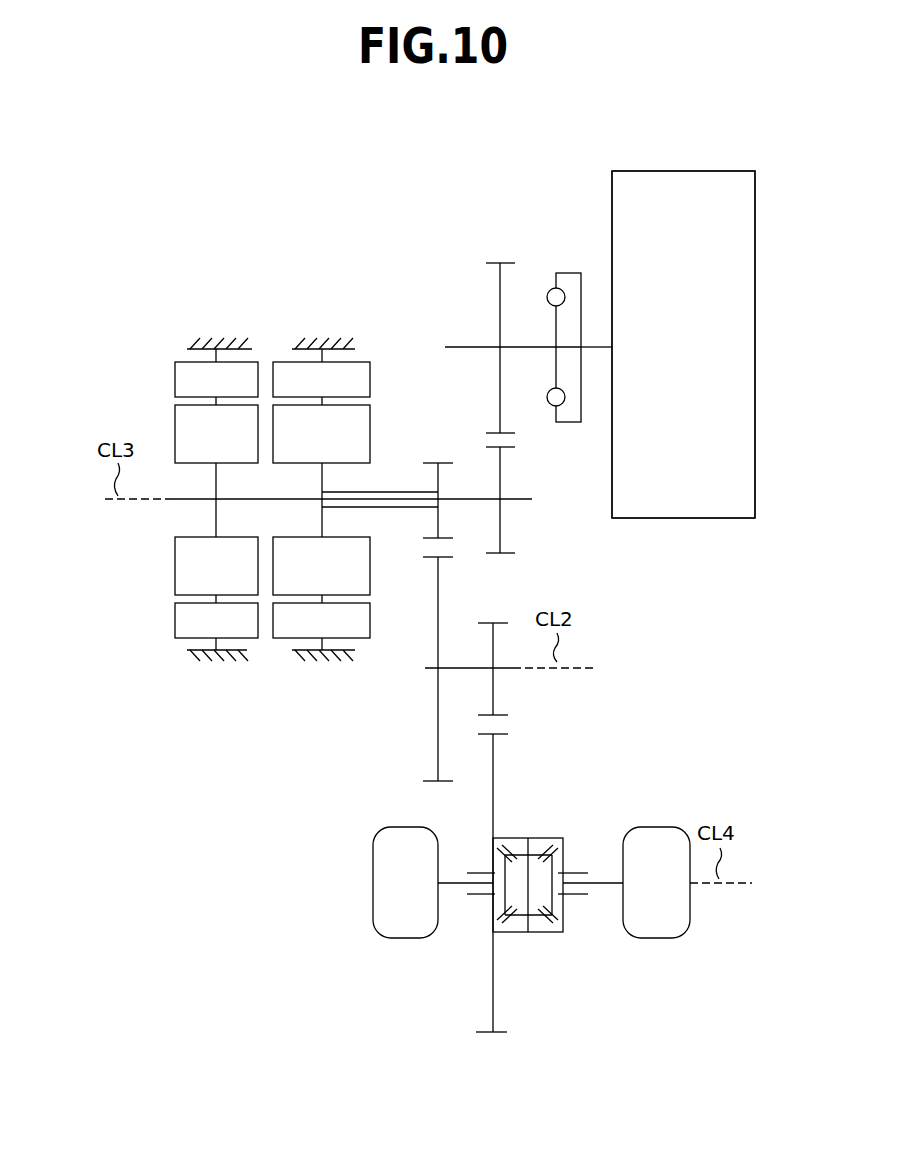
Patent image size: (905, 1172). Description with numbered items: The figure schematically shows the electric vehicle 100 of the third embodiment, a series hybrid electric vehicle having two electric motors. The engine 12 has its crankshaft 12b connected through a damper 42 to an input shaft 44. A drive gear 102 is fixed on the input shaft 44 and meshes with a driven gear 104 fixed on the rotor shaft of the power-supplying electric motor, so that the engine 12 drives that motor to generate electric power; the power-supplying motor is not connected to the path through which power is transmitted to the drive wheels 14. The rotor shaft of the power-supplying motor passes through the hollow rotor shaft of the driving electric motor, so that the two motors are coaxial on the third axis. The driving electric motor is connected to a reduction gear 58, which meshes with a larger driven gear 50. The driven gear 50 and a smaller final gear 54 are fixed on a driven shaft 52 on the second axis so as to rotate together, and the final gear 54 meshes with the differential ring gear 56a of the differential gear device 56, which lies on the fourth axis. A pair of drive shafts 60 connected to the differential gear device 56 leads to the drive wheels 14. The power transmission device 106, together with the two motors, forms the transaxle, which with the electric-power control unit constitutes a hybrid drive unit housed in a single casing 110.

The electric vehicle 100 is at (636, 135).
The engine 12 is at (722, 505).
The crankshaft 12b is at (599, 350).
The damper 42 is at (560, 272).
The input shaft 44 is at (525, 346).
The drive gear 102 is at (498, 431).
The driven gear 104 is at (508, 452).
The reduction gear 58 is at (428, 537).
The driven gear 50 is at (443, 558).
The driven shaft 52 is at (497, 666).
The final gear 54 is at (497, 712).
The differential gear device 56 is at (536, 955).
The differential ring gear 56a is at (505, 740).
The drive shafts 60 is at (450, 887).
The drive wheels 14 is at (408, 932).
The power transmission device 106 is at (246, 1033).
The casing 110 is at (213, 338).